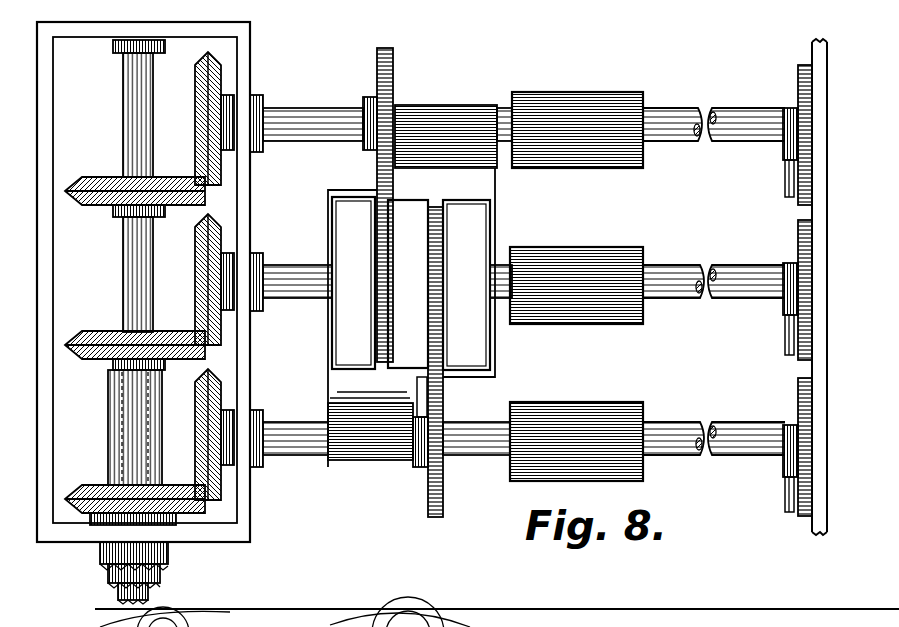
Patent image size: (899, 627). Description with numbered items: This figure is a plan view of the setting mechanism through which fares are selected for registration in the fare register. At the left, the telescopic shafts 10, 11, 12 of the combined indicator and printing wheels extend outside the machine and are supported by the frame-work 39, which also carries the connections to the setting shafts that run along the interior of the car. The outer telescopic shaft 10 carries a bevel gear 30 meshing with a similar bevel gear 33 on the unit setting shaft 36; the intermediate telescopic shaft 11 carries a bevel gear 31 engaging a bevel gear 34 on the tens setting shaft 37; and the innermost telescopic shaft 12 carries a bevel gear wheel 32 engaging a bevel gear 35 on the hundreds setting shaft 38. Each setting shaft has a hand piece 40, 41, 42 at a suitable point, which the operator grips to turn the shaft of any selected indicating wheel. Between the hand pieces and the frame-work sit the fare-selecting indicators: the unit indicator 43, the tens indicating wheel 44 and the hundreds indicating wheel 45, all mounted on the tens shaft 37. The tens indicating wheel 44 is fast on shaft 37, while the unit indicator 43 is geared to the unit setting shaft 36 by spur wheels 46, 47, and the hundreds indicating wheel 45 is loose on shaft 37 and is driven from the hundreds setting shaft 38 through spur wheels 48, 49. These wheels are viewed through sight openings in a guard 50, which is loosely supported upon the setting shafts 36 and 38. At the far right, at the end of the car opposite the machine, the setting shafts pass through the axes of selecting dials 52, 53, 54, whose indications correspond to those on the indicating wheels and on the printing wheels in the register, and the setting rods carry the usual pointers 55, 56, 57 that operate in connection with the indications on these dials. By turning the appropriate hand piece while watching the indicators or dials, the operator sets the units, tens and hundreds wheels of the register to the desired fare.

The outer telescopic shaft 10 is at (100, 552).
The intermediate telescopic shaft 11 is at (112, 400).
The innermost telescopic shaft 12 is at (128, 124).
The bevel gear 30 is at (80, 490).
The bevel gear 31 is at (93, 330).
The bevel gear wheel 32 is at (103, 176).
The bevel gear 33 is at (195, 410).
The bevel gear 34 is at (195, 262).
The bevel gear 35 is at (198, 118).
The unit setting shaft 36 is at (280, 422).
The tens setting shaft 37 is at (280, 272).
The hundreds setting shaft 38 is at (302, 117).
The frame-work 39 is at (250, 55).
The hand piece 40 is at (562, 410).
The hand piece 41 is at (562, 255).
The hand piece 42 is at (562, 102).
The unit indicator 43 is at (495, 212).
The tens indicating wheel 44 is at (410, 200).
The hundreds indicating wheel 45 is at (340, 203).
The spur wheel 46 is at (435, 517).
The spur wheel 47 is at (444, 340).
The spur wheel 48 is at (393, 68).
The spur wheel 49 is at (377, 368).
The guard 50 is at (358, 404).
The selecting dial 52 is at (798, 397).
The selecting dial 53 is at (798, 246).
The selecting dial 54 is at (798, 86).
The pointer 55 is at (786, 497).
The pointer 56 is at (786, 338).
The pointer 57 is at (784, 180).